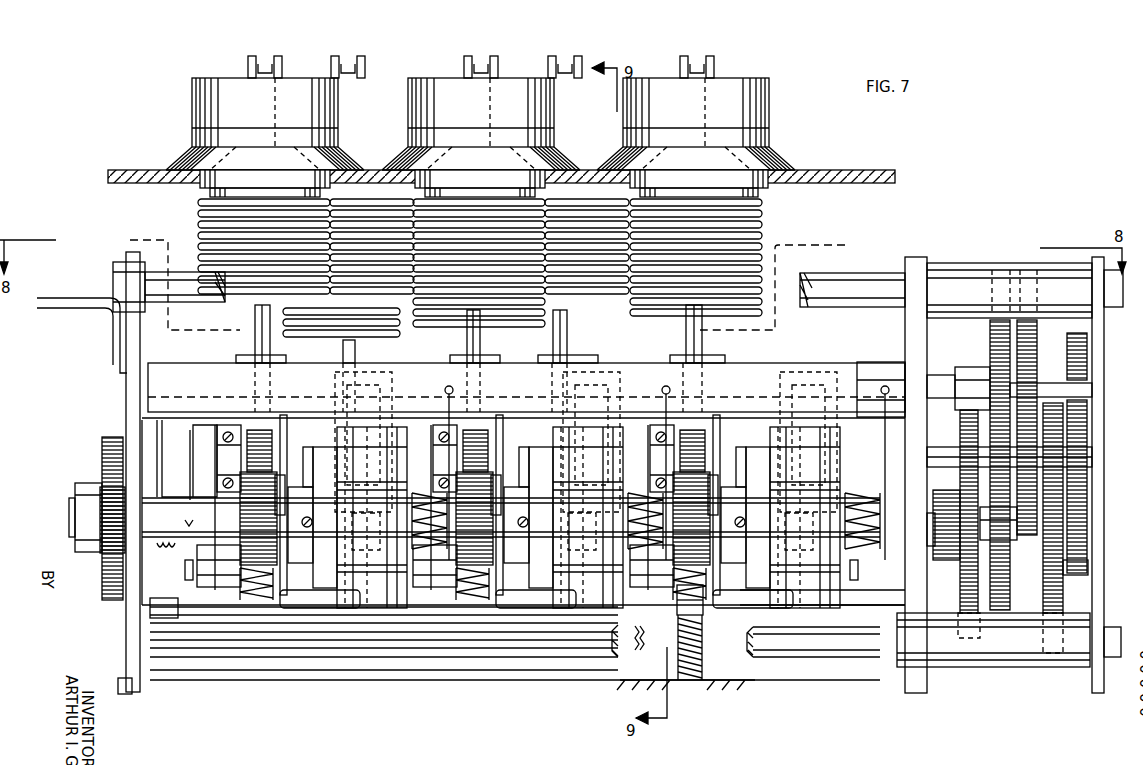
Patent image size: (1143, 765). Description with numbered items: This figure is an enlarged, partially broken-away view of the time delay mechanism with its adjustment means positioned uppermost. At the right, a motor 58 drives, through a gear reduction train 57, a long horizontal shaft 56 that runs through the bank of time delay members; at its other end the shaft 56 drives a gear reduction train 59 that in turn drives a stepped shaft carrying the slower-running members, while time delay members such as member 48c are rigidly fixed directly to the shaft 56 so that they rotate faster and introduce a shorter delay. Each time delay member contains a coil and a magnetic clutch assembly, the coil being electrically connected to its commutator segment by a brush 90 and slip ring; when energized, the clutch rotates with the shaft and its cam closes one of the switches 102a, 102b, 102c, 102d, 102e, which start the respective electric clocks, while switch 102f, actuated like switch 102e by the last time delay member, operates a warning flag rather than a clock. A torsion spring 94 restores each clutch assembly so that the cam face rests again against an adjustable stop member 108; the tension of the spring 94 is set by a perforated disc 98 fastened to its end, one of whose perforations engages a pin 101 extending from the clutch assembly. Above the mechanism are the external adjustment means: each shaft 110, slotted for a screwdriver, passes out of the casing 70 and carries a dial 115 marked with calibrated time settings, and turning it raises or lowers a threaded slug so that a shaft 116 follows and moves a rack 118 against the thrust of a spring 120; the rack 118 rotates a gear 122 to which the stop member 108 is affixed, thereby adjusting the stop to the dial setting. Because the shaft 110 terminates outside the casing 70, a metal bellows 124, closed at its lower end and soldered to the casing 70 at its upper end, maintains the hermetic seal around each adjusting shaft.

The casing 70 is at (152, 178).
The shaft 110 is at (250, 69).
The dial 115 is at (182, 160).
The metal bellows 124 is at (198, 222).
The shaft 116 is at (255, 320).
The switch 102a is at (500, 368).
The switch 102b is at (245, 360).
The switch 102c is at (452, 360).
The switch 102d is at (586, 365).
The switch 102e is at (776, 368).
The switch 102f is at (824, 365).
The rack 118 is at (262, 435).
The torsion spring 94 is at (445, 390).
The pin 101 is at (193, 460).
The brush 90 is at (313, 470).
The gear reduction train 59 is at (102, 456).
The shaft 56 is at (73, 519).
The perforated disc 98 is at (184, 572).
The time delay member 48c is at (380, 590).
The spring 120 is at (257, 593).
The gear 122 is at (237, 580).
The stop member 108 is at (300, 595).
The motor 58 is at (945, 370).
The gear reduction train 57 is at (1043, 573).